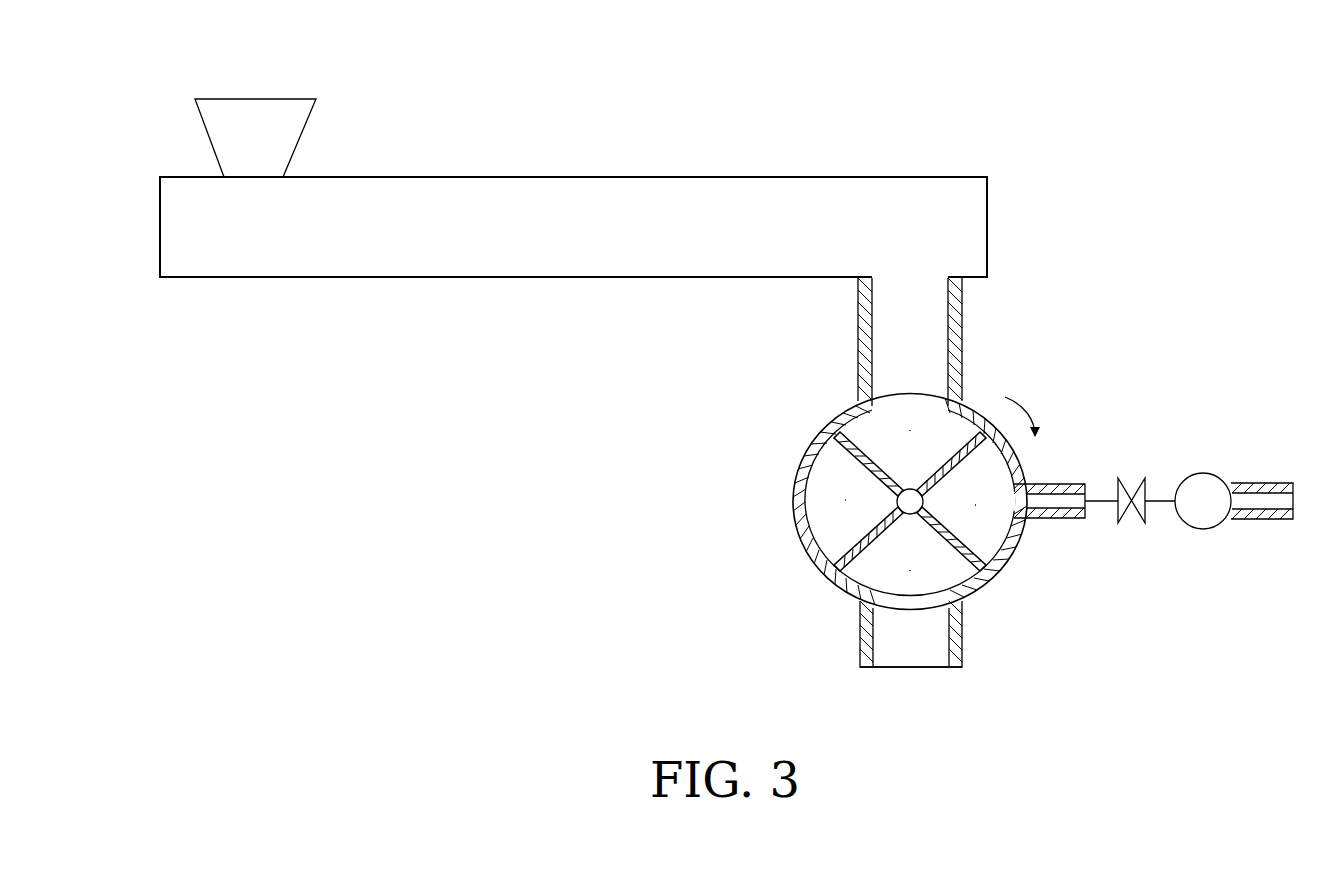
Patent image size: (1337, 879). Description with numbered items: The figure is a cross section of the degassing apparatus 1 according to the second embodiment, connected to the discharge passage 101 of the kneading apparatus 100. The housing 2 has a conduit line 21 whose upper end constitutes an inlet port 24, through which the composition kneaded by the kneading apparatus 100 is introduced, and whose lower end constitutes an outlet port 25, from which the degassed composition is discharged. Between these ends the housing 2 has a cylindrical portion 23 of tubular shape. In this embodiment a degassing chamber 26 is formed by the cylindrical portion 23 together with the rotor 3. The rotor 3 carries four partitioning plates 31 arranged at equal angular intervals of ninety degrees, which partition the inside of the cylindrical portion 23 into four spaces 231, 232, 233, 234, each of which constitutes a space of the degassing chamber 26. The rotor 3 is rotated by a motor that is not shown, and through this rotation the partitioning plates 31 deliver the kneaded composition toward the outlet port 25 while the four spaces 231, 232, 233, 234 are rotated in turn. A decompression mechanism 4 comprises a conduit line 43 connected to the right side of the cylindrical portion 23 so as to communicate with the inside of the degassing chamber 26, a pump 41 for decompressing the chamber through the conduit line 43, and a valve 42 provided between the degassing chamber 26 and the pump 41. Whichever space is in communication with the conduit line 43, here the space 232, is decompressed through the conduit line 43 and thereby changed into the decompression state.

The kneading apparatus 100 is at (431, 136).
The discharge passage 101 is at (913, 278).
The degassing apparatus 1 is at (1089, 366).
The housing 2 is at (890, 493).
The conduit line 21 is at (866, 333).
The cylindrical portion 23 is at (845, 518).
The space 231 is at (935, 437).
The space 232 is at (985, 517).
The space 233 is at (882, 573).
The space 234 is at (845, 553).
The inlet port 24 is at (895, 277).
The outlet port 25 is at (908, 670).
The degassing chamber 26 is at (805, 462).
The rotor 3 is at (909, 536).
The partitioning plates 31 is at (845, 437).
The decompression mechanism 4 is at (1153, 468).
The pump 41 is at (1210, 473).
The valve 42 is at (1131, 478).
The conduit line 43 is at (1068, 517).